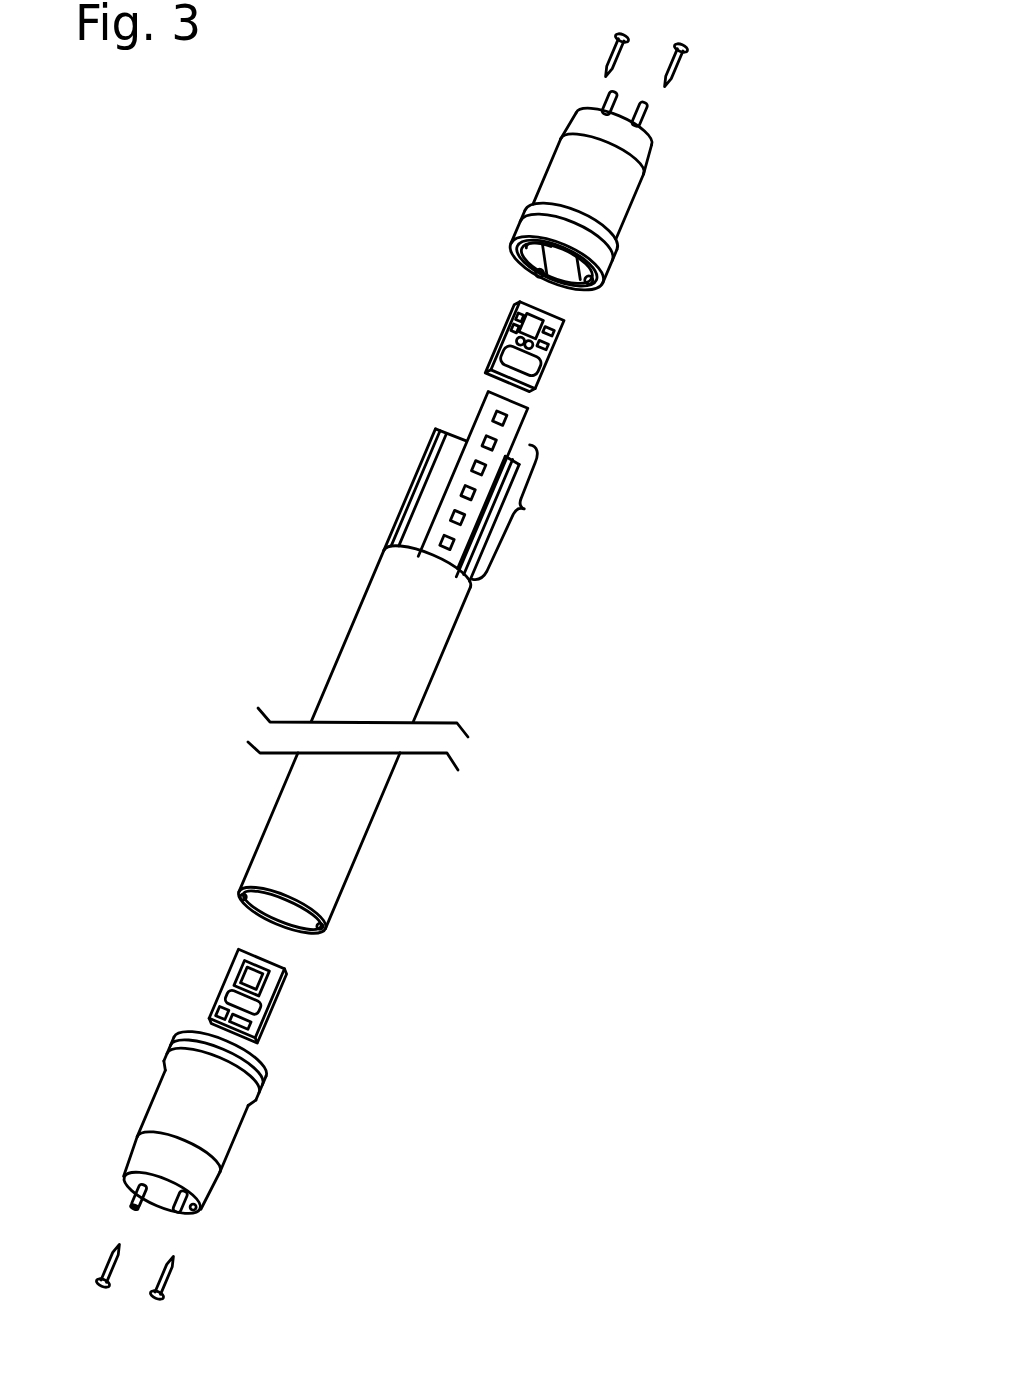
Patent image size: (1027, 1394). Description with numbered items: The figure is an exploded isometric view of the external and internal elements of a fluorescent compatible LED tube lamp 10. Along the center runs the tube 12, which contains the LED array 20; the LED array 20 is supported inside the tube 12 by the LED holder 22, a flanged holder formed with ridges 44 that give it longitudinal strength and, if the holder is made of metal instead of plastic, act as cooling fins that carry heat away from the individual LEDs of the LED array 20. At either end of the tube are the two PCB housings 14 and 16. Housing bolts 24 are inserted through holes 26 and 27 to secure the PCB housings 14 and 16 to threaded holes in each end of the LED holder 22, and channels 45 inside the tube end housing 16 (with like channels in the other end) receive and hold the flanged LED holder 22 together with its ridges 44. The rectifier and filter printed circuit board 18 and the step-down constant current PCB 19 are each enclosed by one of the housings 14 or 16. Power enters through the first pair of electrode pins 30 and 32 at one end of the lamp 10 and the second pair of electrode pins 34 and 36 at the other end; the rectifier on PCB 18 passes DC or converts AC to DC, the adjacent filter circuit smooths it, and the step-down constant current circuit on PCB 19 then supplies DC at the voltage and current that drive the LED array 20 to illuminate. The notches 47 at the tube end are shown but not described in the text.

The fluorescent compatible LED tube lamp 10 is at (595, 1116).
The tube 12 is at (345, 632).
The PCB housing 14 is at (252, 1131).
The PCB housing 16 is at (532, 197).
The rectifier and filter printed circuit board 18 is at (500, 336).
The step-down constant current PCB 19 is at (280, 1002).
The LED array 20 is at (536, 425).
The LED holder 22 is at (526, 514).
The housing bolts 24 is at (604, 59).
The hole 26 is at (207, 1212).
The hole 27 is at (160, 1188).
The electrode pin 30 is at (130, 1214).
The electrode pin 32 is at (183, 1226).
The electrode pin 34 is at (598, 96).
The electrode pin 36 is at (660, 127).
The ridges 44 is at (463, 426).
The channels 45 is at (517, 282).
The notches 47 is at (245, 913).